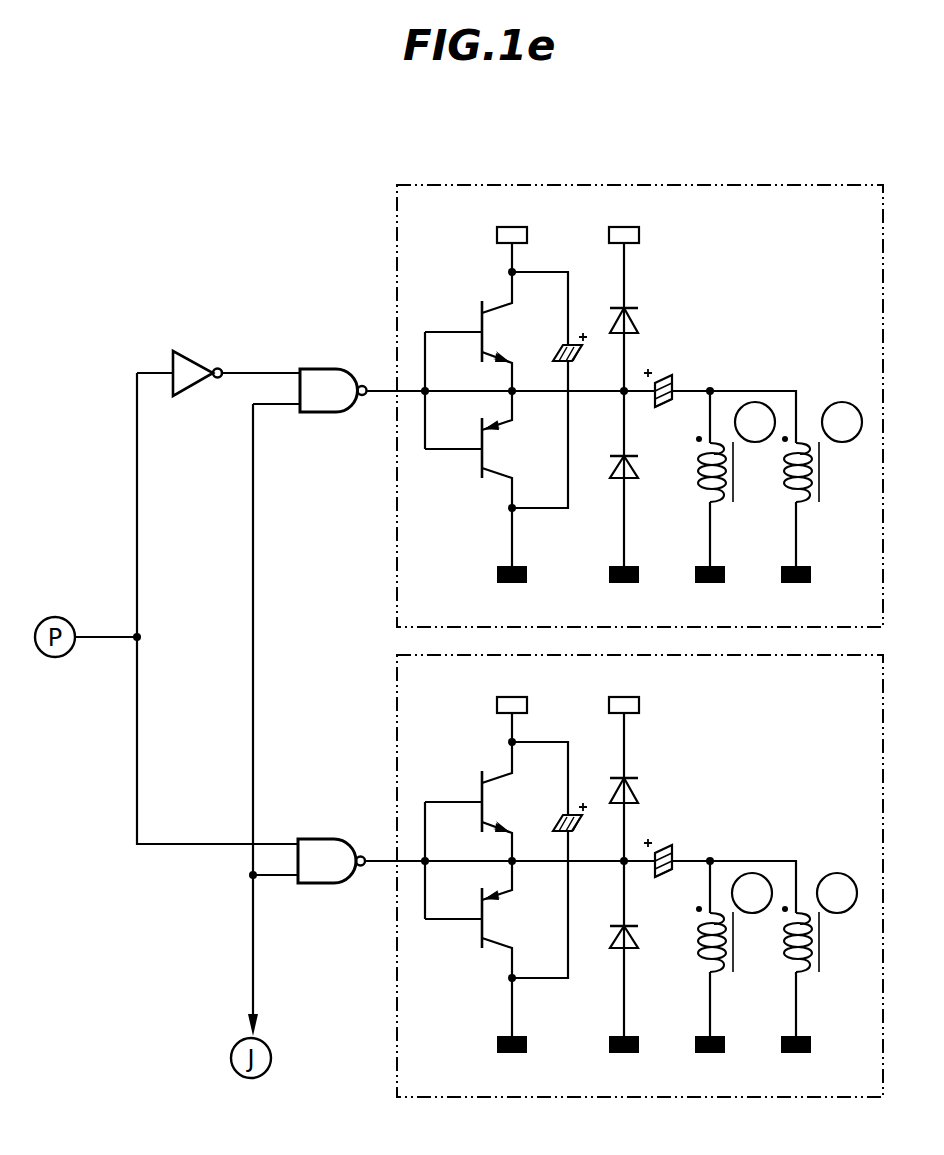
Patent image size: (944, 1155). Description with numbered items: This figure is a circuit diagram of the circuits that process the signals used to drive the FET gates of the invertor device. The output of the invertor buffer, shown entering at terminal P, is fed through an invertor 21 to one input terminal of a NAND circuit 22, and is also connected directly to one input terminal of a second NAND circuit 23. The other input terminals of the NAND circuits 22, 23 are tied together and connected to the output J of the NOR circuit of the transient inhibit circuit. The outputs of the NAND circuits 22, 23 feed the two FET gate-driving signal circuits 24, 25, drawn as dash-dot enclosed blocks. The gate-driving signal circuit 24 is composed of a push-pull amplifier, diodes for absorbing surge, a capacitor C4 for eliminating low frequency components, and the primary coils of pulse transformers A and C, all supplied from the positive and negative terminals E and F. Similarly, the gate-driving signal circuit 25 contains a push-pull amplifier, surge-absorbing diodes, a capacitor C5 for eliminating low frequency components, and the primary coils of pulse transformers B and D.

The invertor 21 is at (197, 363).
The NAND circuit 22 is at (333, 366).
The NAND circuit 23 is at (333, 837).
The FET gate-driving signal circuit 24 is at (599, 406).
The FET gate-driving signal circuit 25 is at (598, 876).
The capacitor C4 is at (673, 374).
The capacitor C5 is at (670, 844).